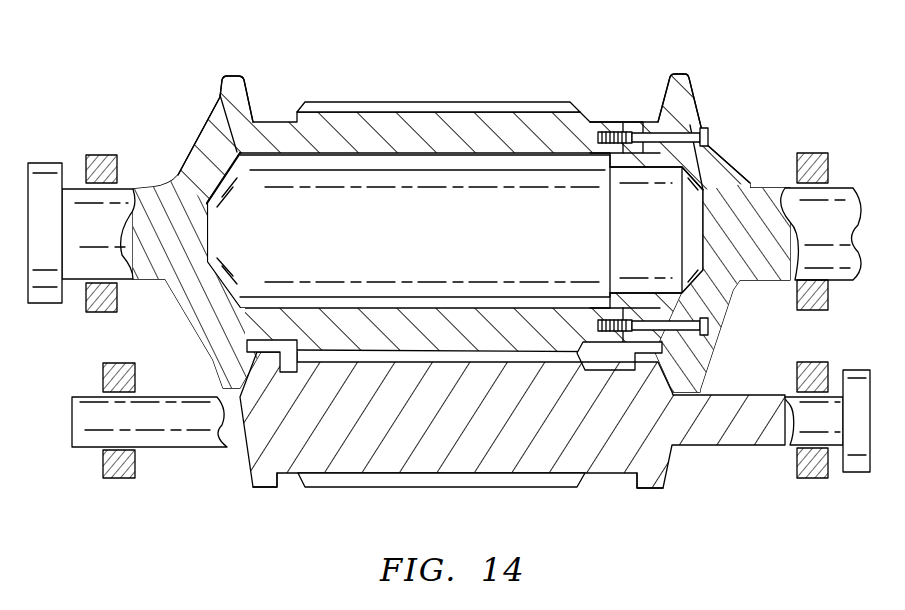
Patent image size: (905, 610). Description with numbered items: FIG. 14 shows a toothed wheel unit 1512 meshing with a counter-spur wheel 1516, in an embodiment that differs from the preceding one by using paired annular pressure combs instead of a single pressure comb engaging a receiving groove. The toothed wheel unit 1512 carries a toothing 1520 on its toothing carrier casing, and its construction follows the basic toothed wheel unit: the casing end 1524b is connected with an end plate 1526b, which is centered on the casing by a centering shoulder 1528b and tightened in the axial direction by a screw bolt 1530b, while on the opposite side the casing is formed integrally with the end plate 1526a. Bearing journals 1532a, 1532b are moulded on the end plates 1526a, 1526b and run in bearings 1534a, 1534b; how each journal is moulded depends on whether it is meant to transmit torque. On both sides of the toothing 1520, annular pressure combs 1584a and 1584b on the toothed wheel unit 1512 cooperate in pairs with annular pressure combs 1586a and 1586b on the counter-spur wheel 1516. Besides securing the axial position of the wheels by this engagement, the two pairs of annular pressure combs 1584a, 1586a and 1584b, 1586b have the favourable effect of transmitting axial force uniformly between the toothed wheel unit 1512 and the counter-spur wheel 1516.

The toothed wheel unit 1512 is at (408, 75).
The counter-spur wheel 1516 is at (504, 468).
The toothing 1520 is at (513, 100).
The end of the toothing carrier casing 1524b is at (597, 128).
The end plate 1526a is at (210, 145).
The end plate 1526b is at (728, 108).
The centering shoulder 1528b is at (615, 163).
The screw bolt 1530b is at (646, 128).
The bearing journal 1532a is at (148, 270).
The bearing journal 1532b is at (769, 186).
The bearing 1534a is at (100, 153).
The bearing 1534b is at (812, 152).
The annular pressure comb 1584a is at (231, 78).
The annular pressure comb 1584b is at (679, 76).
The annular pressure comb 1586a is at (258, 482).
The annular pressure comb 1586b is at (652, 482).